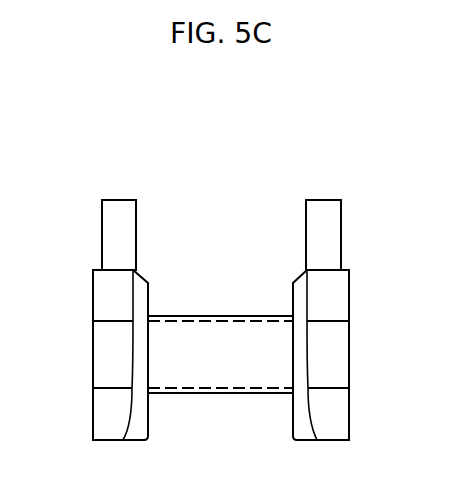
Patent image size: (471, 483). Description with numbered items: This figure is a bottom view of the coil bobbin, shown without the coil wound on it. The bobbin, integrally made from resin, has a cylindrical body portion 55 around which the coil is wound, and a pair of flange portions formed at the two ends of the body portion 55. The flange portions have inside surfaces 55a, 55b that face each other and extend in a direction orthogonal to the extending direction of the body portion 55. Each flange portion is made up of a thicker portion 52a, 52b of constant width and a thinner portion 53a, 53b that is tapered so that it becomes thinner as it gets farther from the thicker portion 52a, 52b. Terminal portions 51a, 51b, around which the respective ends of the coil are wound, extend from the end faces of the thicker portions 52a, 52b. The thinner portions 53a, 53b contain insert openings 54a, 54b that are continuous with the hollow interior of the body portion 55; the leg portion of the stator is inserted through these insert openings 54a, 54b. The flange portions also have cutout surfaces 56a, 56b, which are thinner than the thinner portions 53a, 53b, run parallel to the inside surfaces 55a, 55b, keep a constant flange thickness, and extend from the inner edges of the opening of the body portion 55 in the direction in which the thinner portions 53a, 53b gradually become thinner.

The terminal portion 51a is at (123, 212).
The terminal portion 51b is at (327, 213).
The thicker portion 52a is at (93, 293).
The thicker portion 52b is at (350, 292).
The thinner portion 53a is at (102, 419).
The thinner portion 53b is at (335, 420).
The insert opening 54a is at (107, 348).
The insert opening 54b is at (333, 342).
The body portion 55 is at (220, 372).
The inside surface 55a is at (150, 300).
The inside surface 55b is at (291, 300).
The cutout surface 56a is at (130, 368).
The cutout surface 56b is at (306, 370).